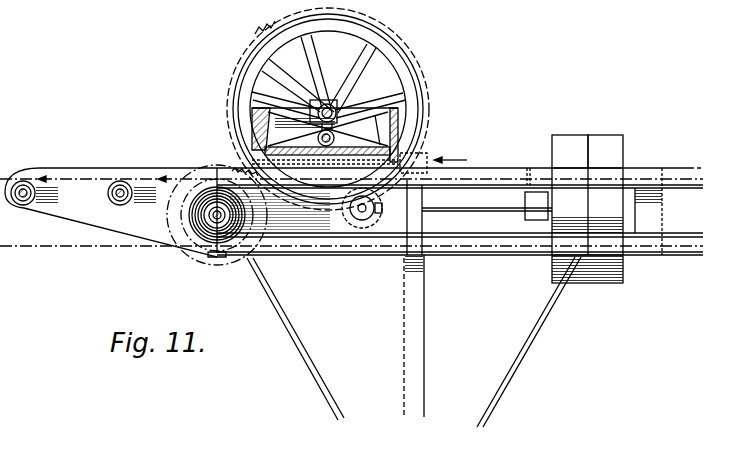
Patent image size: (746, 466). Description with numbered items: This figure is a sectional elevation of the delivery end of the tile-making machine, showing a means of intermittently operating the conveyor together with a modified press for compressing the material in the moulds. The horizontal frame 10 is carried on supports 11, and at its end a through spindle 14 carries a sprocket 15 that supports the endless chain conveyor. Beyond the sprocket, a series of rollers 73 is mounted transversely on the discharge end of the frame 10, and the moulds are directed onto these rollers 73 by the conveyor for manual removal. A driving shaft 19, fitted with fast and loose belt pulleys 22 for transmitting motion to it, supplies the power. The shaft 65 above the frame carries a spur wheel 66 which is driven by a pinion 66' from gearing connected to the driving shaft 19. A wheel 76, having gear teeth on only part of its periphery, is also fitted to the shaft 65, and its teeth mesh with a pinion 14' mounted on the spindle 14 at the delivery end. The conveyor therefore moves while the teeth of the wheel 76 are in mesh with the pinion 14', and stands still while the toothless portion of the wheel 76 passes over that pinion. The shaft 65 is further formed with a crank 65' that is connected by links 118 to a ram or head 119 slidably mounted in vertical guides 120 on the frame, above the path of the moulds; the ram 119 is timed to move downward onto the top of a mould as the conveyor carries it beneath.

The horizontal frame 10 is at (503, 176).
The supports 11 is at (410, 308).
The through spindles 14 is at (217, 228).
The pinion 14' is at (224, 155).
The sprockets 15 is at (216, 244).
The driving shaft 19 is at (496, 211).
The fast and loose belt pulleys 22 is at (598, 140).
The shaft 65 is at (347, 109).
The crank 65' is at (261, 109).
The spur wheel 66 is at (347, 76).
The pinion 66' is at (347, 236).
The rollers 73 is at (110, 197).
The wheel 76 is at (254, 34).
The links 118 is at (383, 117).
The ram or head 119 is at (413, 125).
The vertical guides 120 is at (430, 140).